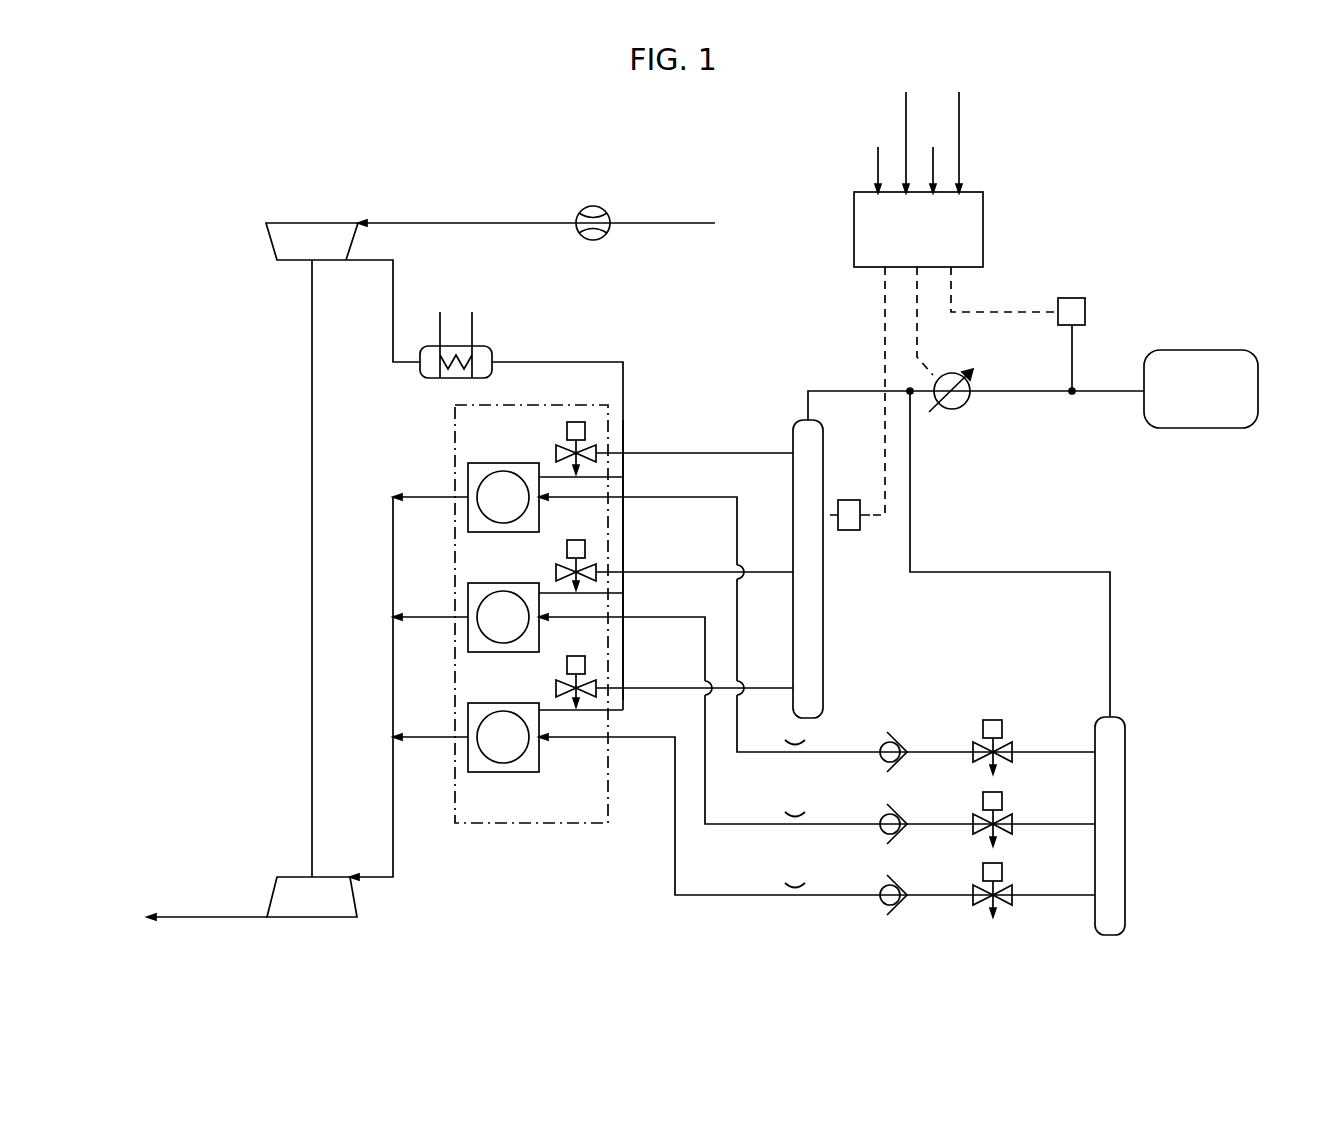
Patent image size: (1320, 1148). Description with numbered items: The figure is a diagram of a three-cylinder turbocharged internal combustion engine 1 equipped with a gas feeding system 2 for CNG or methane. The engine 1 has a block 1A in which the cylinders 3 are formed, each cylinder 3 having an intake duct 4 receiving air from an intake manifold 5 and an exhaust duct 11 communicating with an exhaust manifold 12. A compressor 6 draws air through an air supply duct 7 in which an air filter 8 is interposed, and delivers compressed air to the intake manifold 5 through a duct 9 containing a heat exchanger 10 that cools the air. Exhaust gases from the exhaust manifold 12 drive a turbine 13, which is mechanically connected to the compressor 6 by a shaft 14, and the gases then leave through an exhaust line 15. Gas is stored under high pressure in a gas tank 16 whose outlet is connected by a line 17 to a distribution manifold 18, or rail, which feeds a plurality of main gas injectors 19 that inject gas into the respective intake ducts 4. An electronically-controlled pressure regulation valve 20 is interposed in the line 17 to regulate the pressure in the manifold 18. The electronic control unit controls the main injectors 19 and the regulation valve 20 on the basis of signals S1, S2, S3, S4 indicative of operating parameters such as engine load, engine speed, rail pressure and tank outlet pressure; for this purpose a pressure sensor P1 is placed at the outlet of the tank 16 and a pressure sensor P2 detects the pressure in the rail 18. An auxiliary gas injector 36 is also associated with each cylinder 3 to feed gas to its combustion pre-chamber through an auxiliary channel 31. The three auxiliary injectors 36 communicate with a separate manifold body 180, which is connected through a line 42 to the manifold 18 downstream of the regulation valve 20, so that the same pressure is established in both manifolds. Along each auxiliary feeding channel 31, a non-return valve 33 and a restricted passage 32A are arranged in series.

The multi-cylinder internal combustion engine 1 is at (497, 850).
The block 1A is at (581, 830).
The gas feeding system 2 is at (1094, 260).
The cylinders 3 is at (500, 510).
The intake duct 4 is at (608, 480).
The intake manifold 5 is at (624, 528).
The compressor 6 is at (284, 222).
The air supply duct 7 is at (412, 222).
The air filter 8 is at (592, 207).
The duct 9 is at (540, 362).
The heat exchanger 10 is at (428, 374).
The exhaust duct 11 is at (438, 500).
The exhaust manifold 12 is at (393, 700).
The turbine 13 is at (290, 917).
The shaft 14 is at (312, 600).
The exhaust line 15 is at (200, 916).
The gas tank 16 is at (1188, 428).
The line 17 is at (832, 390).
The distribution manifold 18 is at (824, 622).
The main gas injectors 19 is at (557, 452).
The pressure regulation valve 20 is at (956, 403).
The channel 31 is at (740, 752).
The restricted passage 32A is at (795, 758).
The non-return valve 33 is at (882, 760).
The auxiliary gas injector 36 is at (978, 757).
The line 42 is at (1018, 572).
The separate manifold body 180 is at (1125, 842).
The signal S1 is at (878, 157).
The signal S2 is at (906, 128).
The signal S3 is at (933, 157).
The signal S4 is at (959, 128).
The pressure sensor P1 is at (1085, 311).
The pressure sensor P2 is at (852, 530).